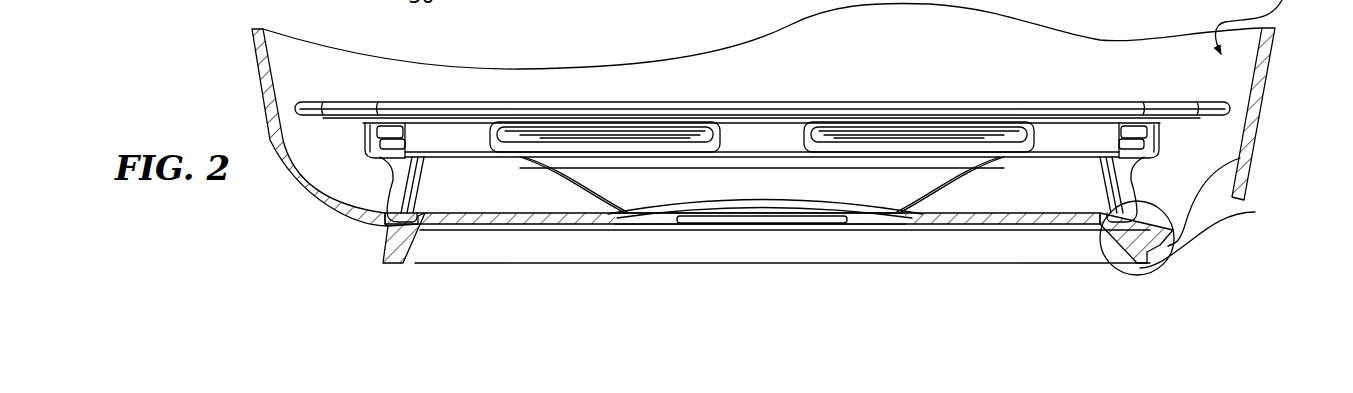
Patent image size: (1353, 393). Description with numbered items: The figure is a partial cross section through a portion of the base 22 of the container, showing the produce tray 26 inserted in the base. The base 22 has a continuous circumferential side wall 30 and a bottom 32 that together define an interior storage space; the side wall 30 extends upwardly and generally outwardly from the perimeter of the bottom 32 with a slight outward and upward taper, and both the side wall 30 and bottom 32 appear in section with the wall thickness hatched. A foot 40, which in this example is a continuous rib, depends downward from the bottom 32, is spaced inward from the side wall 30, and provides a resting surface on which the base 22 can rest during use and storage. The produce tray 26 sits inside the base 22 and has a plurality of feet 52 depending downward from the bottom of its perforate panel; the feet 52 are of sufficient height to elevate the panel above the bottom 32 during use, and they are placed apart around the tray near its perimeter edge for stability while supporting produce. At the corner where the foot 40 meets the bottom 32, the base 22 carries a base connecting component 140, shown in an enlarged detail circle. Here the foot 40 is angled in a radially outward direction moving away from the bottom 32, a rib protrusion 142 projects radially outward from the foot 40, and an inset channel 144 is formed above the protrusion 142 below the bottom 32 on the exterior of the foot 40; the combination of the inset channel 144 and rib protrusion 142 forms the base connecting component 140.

The base 22 is at (1277, 84).
The produce tray 26 is at (1056, 84).
The side wall 30 is at (258, 60).
The bottom 32 is at (466, 213).
The foot 40 is at (420, 248).
The feet 52 is at (402, 178).
The base connecting component 140 is at (1150, 266).
The rib protrusion 142 is at (282, 262).
The inset channel 144 is at (1243, 158).